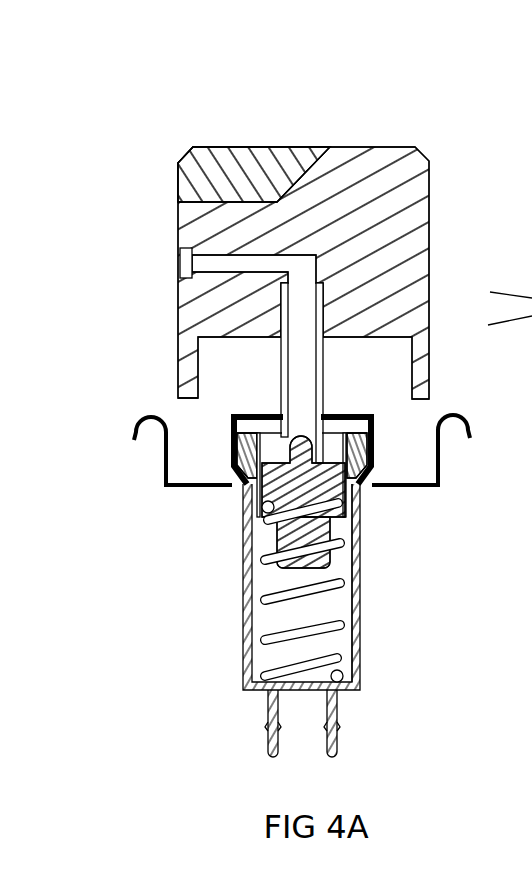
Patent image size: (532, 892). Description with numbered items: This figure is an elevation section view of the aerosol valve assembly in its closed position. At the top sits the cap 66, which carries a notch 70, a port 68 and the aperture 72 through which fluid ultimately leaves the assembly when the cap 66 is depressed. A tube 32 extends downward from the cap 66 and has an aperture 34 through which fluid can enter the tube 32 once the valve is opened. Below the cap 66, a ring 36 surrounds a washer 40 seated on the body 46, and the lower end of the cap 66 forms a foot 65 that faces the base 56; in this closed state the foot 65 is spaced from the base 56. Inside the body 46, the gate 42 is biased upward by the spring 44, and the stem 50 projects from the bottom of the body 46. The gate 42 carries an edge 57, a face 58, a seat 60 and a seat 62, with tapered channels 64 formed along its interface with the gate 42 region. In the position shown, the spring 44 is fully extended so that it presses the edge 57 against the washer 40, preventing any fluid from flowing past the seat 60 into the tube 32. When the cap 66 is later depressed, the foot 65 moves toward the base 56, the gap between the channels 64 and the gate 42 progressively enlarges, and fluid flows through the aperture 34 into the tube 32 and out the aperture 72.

The tube 32 is at (322, 383).
The aperture 34 is at (235, 472).
The ring 36 is at (460, 429).
The washer 40 is at (242, 425).
The gate 42 is at (358, 512).
The spring 44 is at (333, 661).
The body 46 is at (361, 606).
The stem 50 is at (340, 747).
The base 56 is at (427, 488).
The edge 57 is at (252, 438).
The face 58 is at (262, 510).
The seat 60 is at (350, 475).
The seat 62 is at (338, 456).
The channel 64 is at (256, 450).
The foot 65 is at (187, 400).
The cap 66 is at (435, 185).
The port 68 is at (303, 275).
The notch 70 is at (253, 153).
The aperture 72 is at (178, 263).